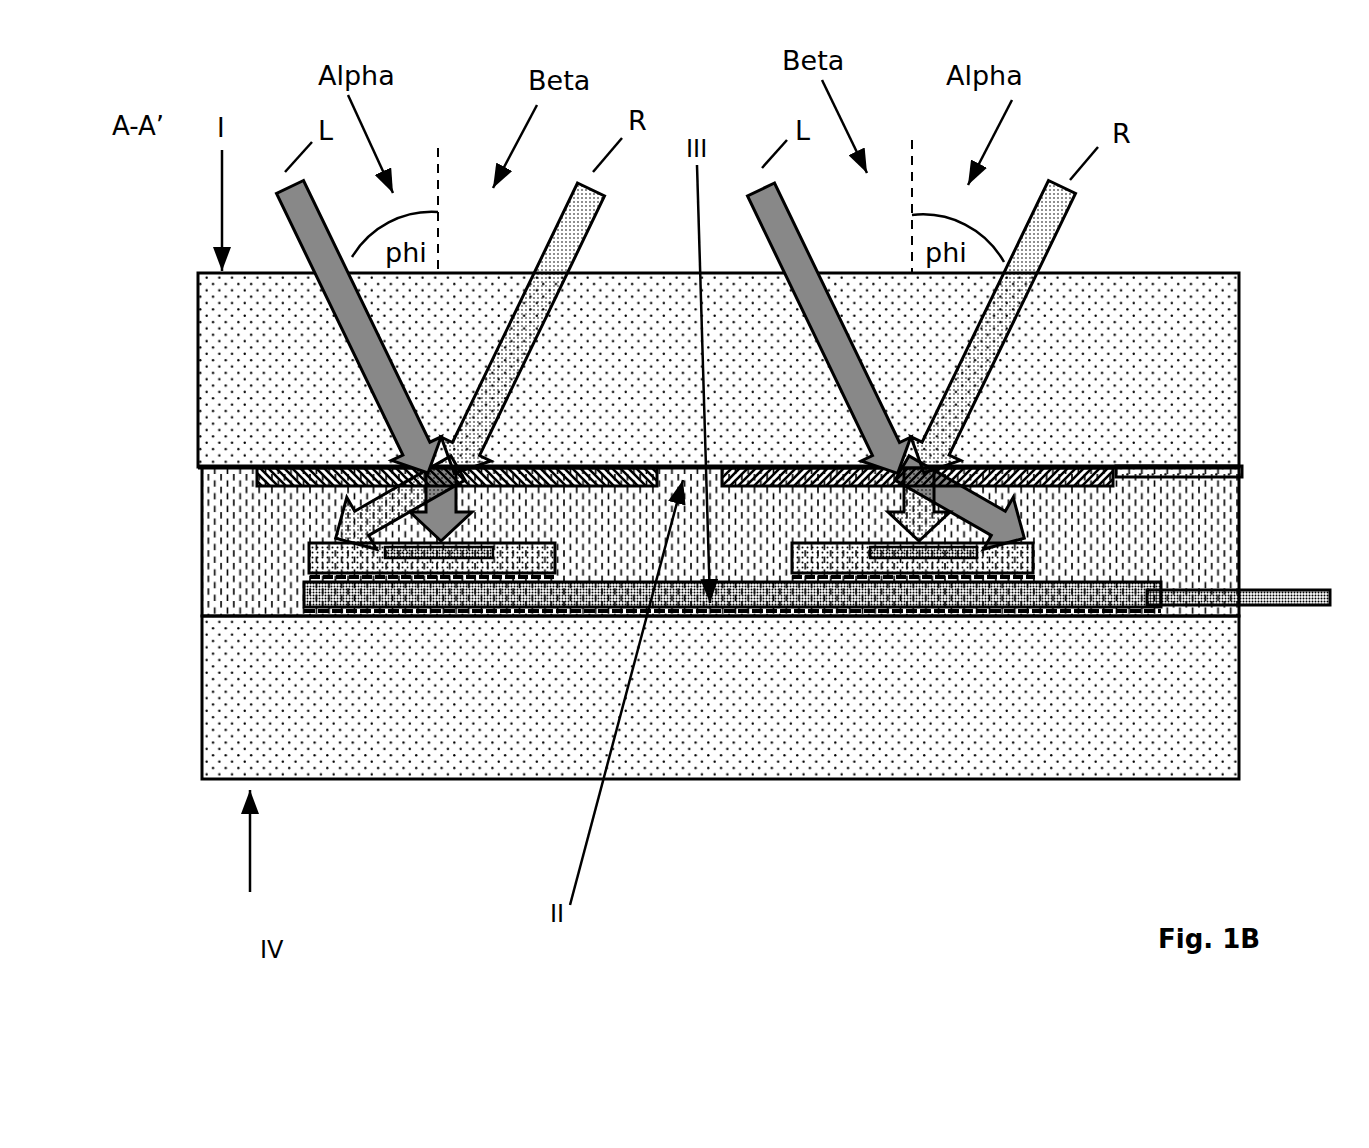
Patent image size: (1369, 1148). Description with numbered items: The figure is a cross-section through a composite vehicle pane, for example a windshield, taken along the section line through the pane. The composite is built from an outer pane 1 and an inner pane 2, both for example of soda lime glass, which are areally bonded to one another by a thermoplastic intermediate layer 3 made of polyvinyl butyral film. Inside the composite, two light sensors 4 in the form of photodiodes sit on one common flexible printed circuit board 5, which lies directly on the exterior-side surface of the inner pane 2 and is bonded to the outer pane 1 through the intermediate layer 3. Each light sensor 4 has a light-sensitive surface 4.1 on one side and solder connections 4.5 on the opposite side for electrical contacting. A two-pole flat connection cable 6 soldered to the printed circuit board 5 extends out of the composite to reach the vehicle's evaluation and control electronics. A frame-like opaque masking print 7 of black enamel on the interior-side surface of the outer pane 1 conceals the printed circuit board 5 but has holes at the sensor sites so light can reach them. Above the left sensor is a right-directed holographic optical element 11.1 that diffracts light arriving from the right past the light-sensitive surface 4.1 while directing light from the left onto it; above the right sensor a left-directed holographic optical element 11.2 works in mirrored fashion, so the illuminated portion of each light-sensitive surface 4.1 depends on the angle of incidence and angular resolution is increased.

The outer pane 1 is at (1155, 333).
The inner pane 2 is at (1160, 748).
The thermoplastic intermediate layer 3 is at (1172, 507).
The light sensor 4 is at (307, 560).
The light-sensitive surface 4.1 is at (413, 557).
The solder connections 4.5 is at (307, 585).
The flexible printed circuit board 5 is at (1120, 590).
The connection cable 6 is at (1270, 592).
The masking print 7 is at (1140, 465).
The right-directed holographic optical element 11.1 is at (260, 465).
The left-directed holographic optical element 11.2 is at (1047, 467).